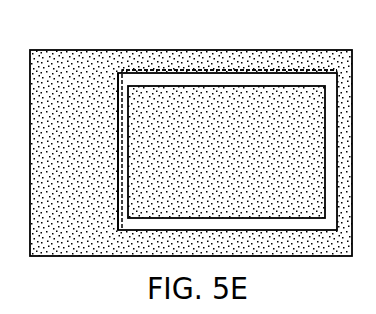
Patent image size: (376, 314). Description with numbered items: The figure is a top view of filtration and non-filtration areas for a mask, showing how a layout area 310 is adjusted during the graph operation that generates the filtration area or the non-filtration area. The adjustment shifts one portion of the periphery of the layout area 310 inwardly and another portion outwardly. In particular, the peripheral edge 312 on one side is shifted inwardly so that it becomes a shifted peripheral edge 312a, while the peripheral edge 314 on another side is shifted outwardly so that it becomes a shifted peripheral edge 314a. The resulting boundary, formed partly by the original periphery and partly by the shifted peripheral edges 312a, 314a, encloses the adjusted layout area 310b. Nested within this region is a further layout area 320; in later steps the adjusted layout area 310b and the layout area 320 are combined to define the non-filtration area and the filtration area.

The layout area 310 is at (249, 59).
The adjusted layout area 310b is at (54, 78).
The peripheral edge 312 is at (118, 72).
The shifted peripheral edge 312a is at (117, 110).
The peripheral edge 314 is at (166, 66).
The shifted peripheral edge 314a is at (207, 69).
The layout area 320 is at (286, 102).